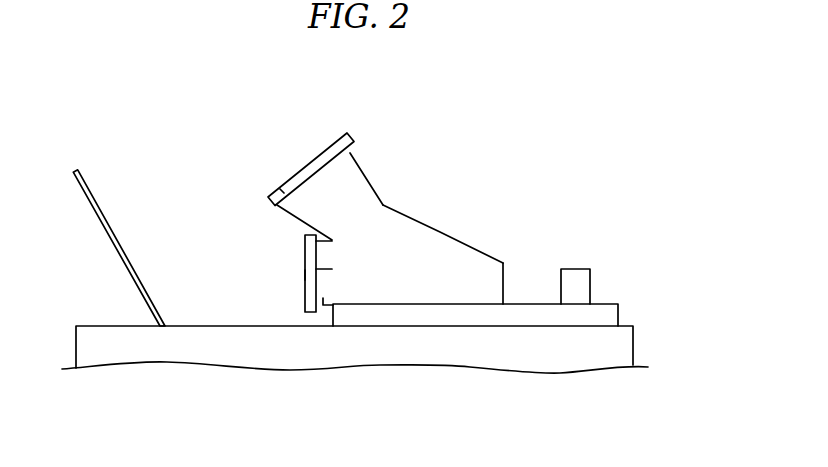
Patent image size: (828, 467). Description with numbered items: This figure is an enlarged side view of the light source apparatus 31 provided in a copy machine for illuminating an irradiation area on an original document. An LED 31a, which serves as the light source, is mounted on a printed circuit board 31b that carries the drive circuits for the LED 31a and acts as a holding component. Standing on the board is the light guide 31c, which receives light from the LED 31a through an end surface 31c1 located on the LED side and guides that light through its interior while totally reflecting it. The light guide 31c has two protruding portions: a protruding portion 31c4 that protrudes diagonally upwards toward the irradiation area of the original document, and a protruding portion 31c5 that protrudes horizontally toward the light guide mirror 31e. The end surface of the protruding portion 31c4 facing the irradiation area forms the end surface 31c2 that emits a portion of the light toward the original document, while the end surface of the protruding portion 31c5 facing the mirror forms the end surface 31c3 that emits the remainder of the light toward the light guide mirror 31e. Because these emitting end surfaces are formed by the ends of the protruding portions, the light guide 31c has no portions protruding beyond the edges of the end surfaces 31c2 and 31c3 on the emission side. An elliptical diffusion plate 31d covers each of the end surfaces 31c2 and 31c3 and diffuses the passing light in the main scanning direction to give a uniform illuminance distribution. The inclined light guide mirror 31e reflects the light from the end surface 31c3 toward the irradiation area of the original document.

The light source apparatus 31 is at (631, 275).
The LED 31a is at (580, 276).
The printed circuit board 31b is at (445, 328).
The light guide 31c is at (407, 190).
The end surface 31c1 is at (505, 278).
The end surface 31c2 is at (311, 157).
The end surface 31c3 is at (314, 269).
The protruding portion 31c4 is at (348, 172).
The protruding portion 31c5 is at (323, 298).
The elliptical diffusion plate 31d is at (280, 188).
The light guide mirror 31e is at (98, 200).